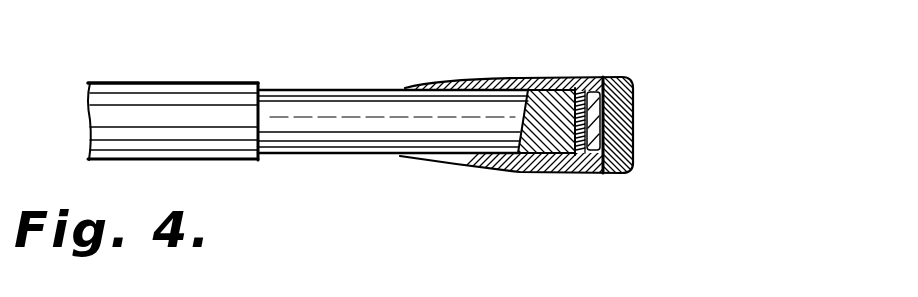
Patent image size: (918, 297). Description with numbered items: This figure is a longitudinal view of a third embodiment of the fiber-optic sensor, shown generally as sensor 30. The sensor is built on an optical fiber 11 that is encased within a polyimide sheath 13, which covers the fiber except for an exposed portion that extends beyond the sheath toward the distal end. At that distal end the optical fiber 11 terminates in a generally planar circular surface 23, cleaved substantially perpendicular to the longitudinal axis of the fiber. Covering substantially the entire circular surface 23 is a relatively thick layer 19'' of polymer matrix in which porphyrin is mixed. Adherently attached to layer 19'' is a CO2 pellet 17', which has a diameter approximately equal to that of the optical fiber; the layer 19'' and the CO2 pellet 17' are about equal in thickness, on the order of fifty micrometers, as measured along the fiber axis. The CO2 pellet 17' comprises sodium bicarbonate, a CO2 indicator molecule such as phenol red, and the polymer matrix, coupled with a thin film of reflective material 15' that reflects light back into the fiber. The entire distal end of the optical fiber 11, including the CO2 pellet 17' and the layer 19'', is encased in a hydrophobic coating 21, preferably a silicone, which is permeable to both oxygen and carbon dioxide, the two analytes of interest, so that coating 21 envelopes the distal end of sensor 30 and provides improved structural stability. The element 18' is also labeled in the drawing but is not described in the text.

The optical fiber 11 is at (358, 153).
The polyimide sheath 13 is at (205, 82).
The thin film of reflective material 15' is at (616, 125).
The CO2 pellet 17' is at (598, 92).
The bottom wall 18' is at (537, 191).
The layer of polymer matrix 19'' is at (579, 161).
The hydrophobic coating 21 is at (702, 85).
The circular surface 23 is at (537, 80).
The sensor 30 is at (732, 70).